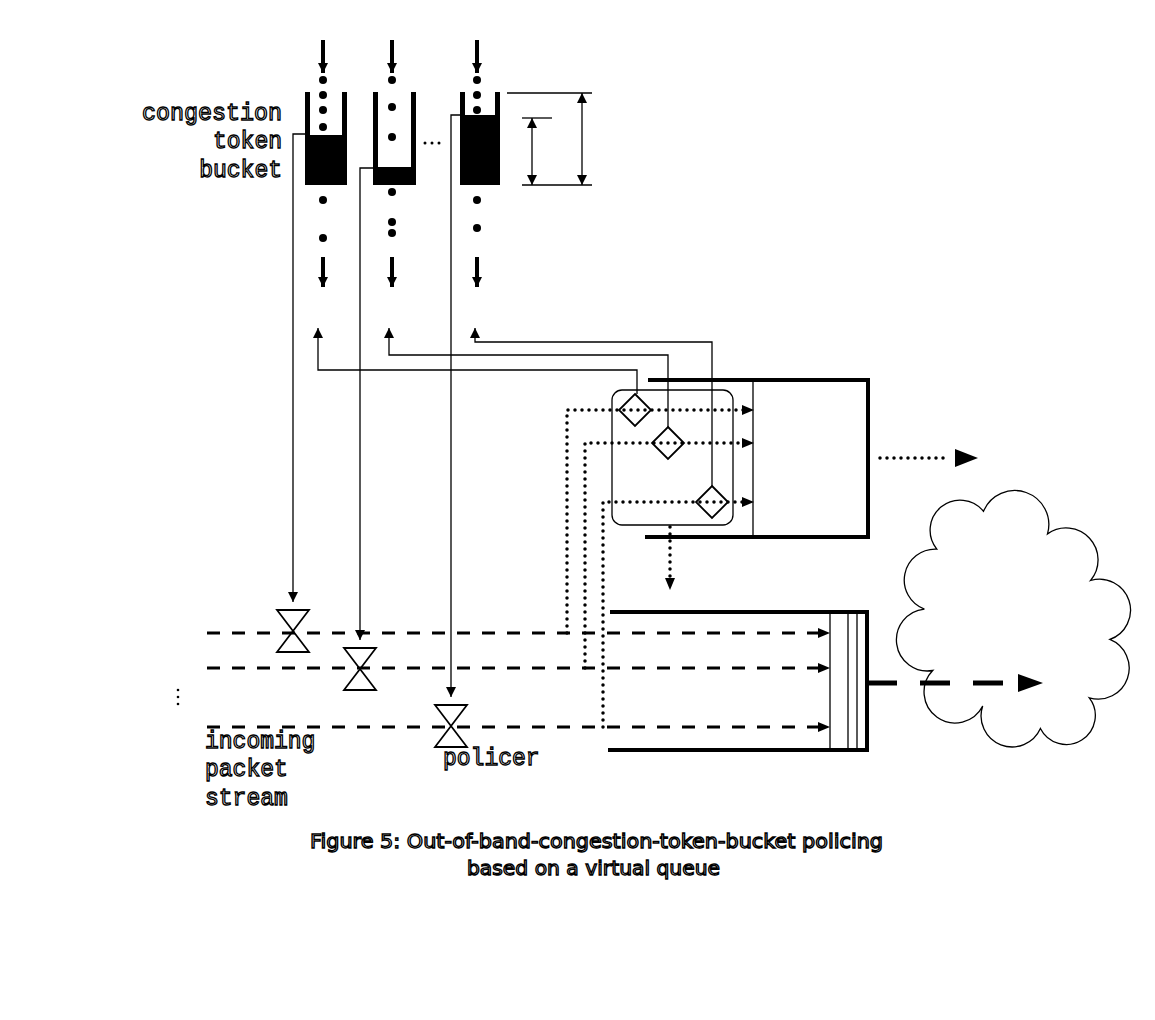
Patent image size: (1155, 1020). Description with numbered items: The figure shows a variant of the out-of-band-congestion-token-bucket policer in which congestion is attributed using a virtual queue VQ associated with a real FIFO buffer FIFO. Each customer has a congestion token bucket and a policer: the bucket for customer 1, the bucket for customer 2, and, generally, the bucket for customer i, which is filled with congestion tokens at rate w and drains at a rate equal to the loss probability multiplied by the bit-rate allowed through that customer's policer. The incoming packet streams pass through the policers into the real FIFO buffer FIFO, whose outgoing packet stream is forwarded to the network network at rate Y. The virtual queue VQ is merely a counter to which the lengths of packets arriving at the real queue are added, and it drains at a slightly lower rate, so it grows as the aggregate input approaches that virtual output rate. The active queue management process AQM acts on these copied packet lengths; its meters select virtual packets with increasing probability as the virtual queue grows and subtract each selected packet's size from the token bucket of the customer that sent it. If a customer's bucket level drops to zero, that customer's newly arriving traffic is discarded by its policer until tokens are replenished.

The token-bucket policer of customer 1 is at (495, 346).
The token-bucket policer of customer 2 is at (495, 365).
The token-bucket policer of customer i is at (495, 393).
The active queue management process AQM is at (604, 392).
The virtual queue VQ is at (896, 426).
The FIFO buffer FIFO is at (825, 686).
The element network is at (1013, 619).